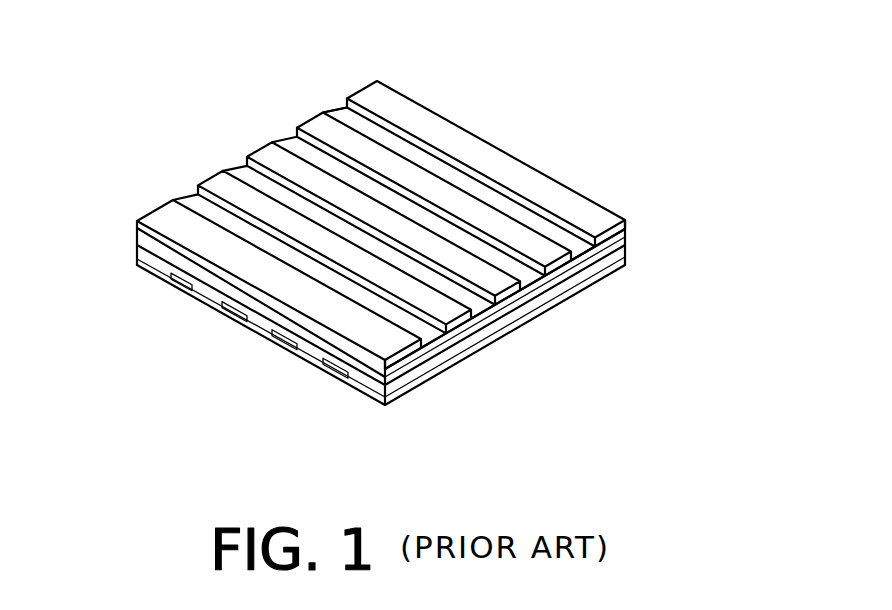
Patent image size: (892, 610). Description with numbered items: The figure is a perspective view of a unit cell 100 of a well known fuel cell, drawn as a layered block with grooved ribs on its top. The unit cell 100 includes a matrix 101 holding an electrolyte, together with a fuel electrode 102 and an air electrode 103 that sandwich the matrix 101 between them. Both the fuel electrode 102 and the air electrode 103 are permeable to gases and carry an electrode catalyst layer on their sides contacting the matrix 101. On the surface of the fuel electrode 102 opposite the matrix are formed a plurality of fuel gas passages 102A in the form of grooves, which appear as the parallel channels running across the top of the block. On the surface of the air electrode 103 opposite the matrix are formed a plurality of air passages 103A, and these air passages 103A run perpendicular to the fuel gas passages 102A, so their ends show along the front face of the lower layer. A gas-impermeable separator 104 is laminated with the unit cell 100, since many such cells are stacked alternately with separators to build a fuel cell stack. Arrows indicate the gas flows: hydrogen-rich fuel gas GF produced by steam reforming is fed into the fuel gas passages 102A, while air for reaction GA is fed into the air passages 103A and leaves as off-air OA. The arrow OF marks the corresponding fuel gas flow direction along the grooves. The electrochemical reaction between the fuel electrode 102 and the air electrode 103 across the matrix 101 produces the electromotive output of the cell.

The unit cell 100 is at (394, 266).
The matrix 101 is at (608, 243).
The fuel electrode 102 is at (590, 198).
The fuel gas passages 102A is at (480, 193).
The air electrode 103 is at (514, 318).
The air passages 103A is at (189, 289).
The separator 104 is at (333, 371).
The optical fiber direction OF is at (336, 104).
The off-air OA is at (502, 91).
The air for reaction GA is at (172, 287).
The hydrogen-rich fuel gas GF is at (562, 236).